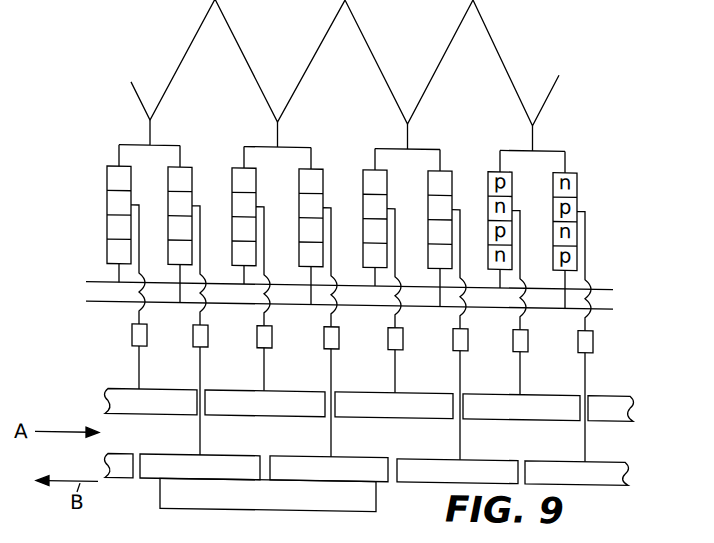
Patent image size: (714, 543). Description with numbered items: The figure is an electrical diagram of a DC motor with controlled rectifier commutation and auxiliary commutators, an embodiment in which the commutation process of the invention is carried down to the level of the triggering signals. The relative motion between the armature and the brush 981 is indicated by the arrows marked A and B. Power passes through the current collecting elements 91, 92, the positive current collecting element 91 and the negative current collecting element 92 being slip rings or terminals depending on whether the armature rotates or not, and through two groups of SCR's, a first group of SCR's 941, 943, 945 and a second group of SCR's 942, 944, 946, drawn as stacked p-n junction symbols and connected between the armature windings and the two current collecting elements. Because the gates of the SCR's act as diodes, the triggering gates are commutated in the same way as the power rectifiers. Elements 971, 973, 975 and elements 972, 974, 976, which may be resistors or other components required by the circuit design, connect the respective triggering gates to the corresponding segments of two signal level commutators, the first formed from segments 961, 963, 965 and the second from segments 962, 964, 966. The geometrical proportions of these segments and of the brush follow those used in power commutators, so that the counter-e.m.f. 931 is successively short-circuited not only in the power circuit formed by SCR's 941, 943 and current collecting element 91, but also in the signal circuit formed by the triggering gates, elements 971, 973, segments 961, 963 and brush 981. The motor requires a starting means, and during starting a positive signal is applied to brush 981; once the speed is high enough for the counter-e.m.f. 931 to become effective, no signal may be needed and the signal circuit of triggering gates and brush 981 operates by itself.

The current collecting element 91 is at (602, 302).
The current collecting element 92 is at (604, 284).
The counter-e.m.f. 931 is at (231, 62).
The SCR 941 is at (190, 167).
The SCR 942 is at (107, 173).
The SCR 943 is at (322, 166).
The SCR 944 is at (237, 166).
The SCR 945 is at (447, 166).
The SCR 946 is at (364, 166).
The segment 961 is at (200, 468).
The segment 962 is at (151, 401).
The segment 963 is at (329, 470).
The segment 964 is at (265, 404).
The segment 965 is at (457, 473).
The segment 966 is at (394, 406).
The gate connecting element 971 is at (174, 389).
The gate connecting element 972 is at (131, 334).
The gate connecting element 973 is at (323, 340).
The gate connecting element 974 is at (257, 340).
The gate connecting element 975 is at (455, 342).
The gate connecting element 976 is at (388, 339).
The brush 981 is at (268, 494).